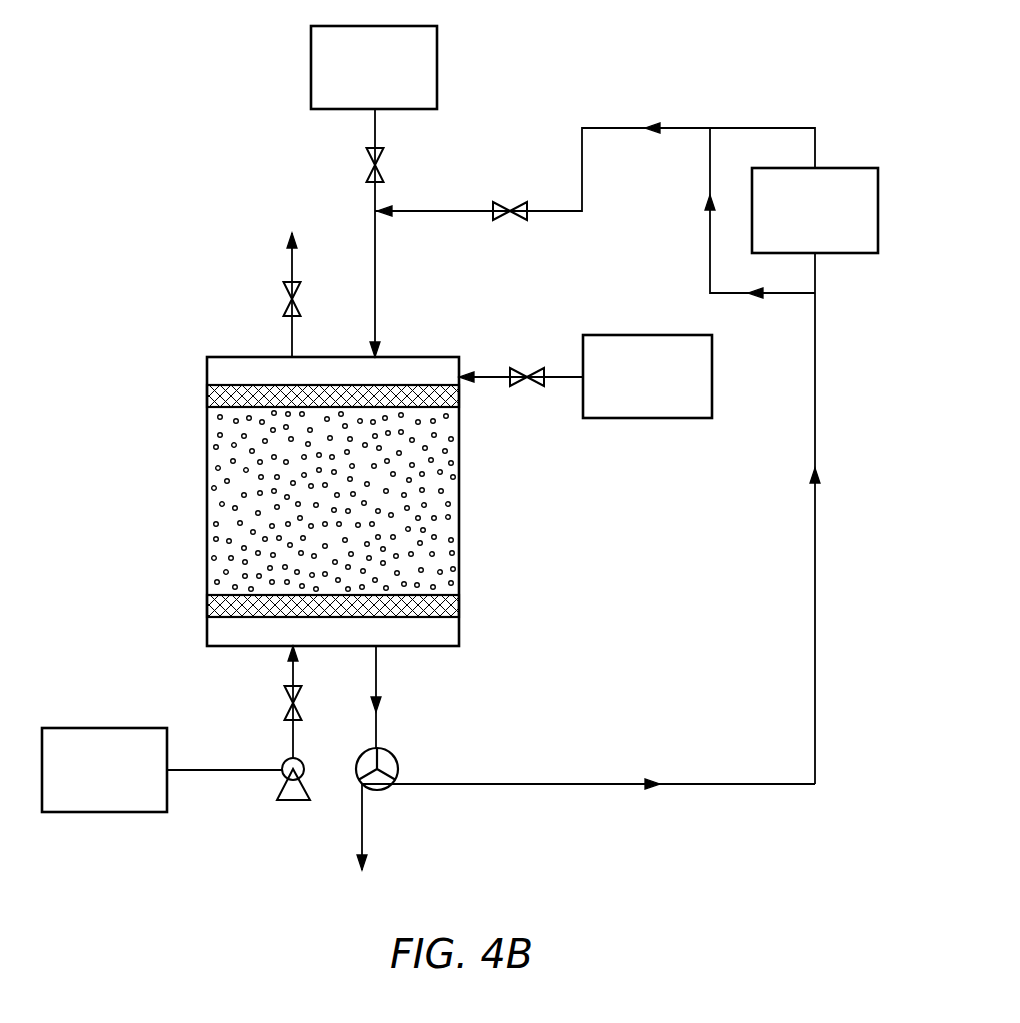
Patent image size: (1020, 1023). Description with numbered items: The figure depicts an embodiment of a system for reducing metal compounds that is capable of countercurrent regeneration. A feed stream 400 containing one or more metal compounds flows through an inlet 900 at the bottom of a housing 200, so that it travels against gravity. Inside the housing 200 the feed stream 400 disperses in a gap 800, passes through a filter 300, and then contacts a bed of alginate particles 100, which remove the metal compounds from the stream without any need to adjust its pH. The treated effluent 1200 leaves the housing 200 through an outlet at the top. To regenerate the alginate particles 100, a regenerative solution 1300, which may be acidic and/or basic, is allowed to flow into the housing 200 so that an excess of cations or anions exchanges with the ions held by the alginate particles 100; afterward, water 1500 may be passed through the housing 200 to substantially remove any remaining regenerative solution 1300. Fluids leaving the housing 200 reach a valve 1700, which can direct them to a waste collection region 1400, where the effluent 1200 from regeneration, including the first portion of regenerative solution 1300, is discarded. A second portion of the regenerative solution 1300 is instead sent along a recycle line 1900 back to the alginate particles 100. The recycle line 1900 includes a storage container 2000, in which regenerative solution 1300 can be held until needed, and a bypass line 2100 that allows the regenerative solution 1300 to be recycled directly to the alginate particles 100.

The alginate particles 100 is at (459, 488).
The housing 200 is at (459, 540).
The filter 300 is at (207, 395).
The feed stream 400 is at (125, 783).
The gap 800 is at (452, 630).
The inlet 900 is at (289, 650).
The effluent 1200 is at (290, 327).
The regenerative solution 1300 is at (400, 78).
The waste 1400 is at (362, 822).
The water 1500 is at (673, 388).
The valve 1700 is at (399, 752).
The regenerative solution recycle line 1900 is at (546, 785).
The storage container 2000 is at (841, 223).
The bypass line 2100 is at (710, 250).